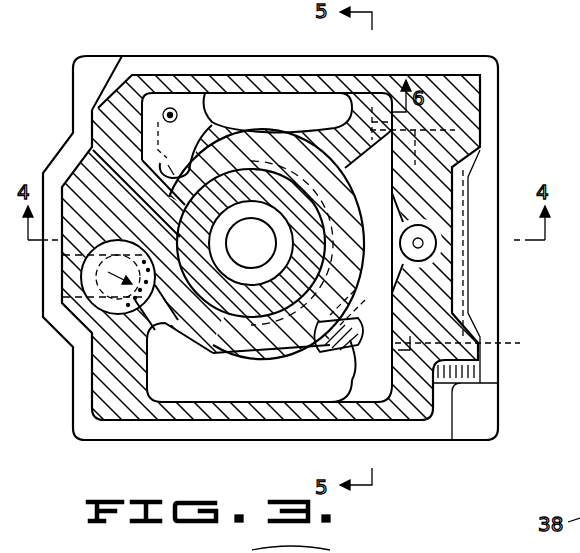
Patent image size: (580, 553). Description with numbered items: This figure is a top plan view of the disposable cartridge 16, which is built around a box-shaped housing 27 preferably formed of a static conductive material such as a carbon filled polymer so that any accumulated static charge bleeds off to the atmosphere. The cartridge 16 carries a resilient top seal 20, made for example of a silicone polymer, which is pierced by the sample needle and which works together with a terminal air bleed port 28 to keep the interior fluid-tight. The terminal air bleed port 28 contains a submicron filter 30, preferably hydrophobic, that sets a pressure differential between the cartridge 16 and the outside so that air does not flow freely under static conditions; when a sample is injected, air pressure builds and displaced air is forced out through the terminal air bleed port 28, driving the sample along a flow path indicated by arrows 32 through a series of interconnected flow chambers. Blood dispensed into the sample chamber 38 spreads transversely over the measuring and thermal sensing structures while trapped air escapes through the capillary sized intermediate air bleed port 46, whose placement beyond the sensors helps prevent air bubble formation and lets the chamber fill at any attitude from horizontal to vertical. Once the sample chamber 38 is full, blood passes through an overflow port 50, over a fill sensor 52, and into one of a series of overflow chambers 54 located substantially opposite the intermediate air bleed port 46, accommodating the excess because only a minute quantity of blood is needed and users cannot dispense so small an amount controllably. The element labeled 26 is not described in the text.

The disposable cartridge 16 is at (446, 52).
The box-shaped housing 27 is at (500, 80).
The fill sensor 52 is at (172, 108).
The flow path arrows 32 is at (205, 92).
The overflow chambers 54 is at (175, 147).
The overflow port 50 is at (160, 163).
The intermediate air bleed port 46 is at (423, 243).
The sample chamber 38 is at (471, 261).
The terminal air bleed port 28 is at (97, 303).
The submicron filter 30 is at (95, 330).
The top seal 20 is at (243, 277).
The rotor bore 26 is at (266, 244).